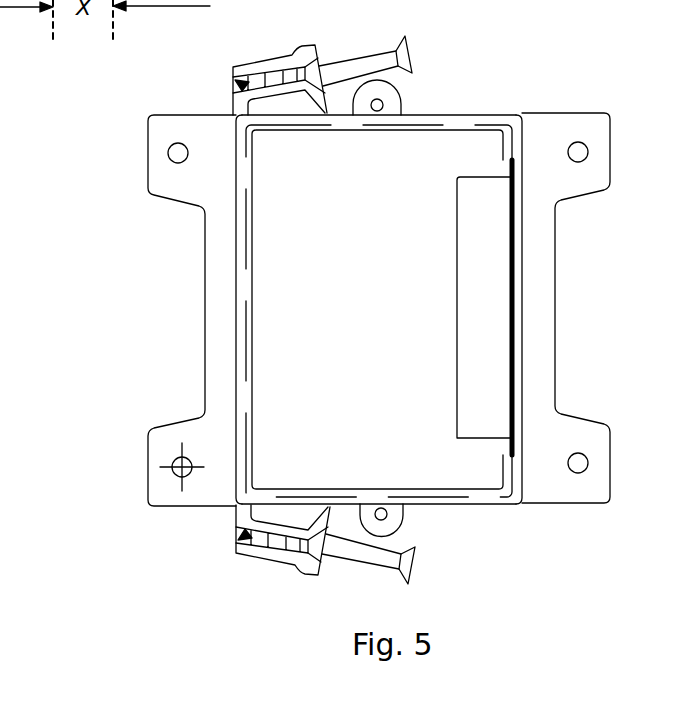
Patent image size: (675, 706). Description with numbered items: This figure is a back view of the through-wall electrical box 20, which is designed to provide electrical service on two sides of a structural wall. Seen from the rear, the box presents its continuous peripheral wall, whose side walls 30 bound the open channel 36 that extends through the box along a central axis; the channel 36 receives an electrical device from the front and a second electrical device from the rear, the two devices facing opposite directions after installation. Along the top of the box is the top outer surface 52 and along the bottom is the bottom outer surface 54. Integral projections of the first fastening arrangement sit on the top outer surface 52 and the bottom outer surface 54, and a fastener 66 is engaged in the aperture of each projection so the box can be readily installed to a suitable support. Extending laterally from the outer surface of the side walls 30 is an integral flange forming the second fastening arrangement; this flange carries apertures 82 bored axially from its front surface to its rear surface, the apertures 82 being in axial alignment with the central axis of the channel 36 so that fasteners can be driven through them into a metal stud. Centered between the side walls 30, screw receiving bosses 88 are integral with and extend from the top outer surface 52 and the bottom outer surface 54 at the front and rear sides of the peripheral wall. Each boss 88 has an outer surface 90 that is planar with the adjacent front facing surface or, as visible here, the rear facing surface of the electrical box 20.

The through-wall electrical box 20 is at (108, 251).
The side walls 30 is at (240, 295).
The channel 36 is at (303, 312).
The top outer surface 52 is at (491, 100).
The bottom outer surface 54 is at (498, 518).
The fastener 66 is at (360, 53).
The apertures 82 is at (178, 144).
The screw receiving bosses 88 is at (417, 68).
The outer surface of boss 90 is at (365, 97).